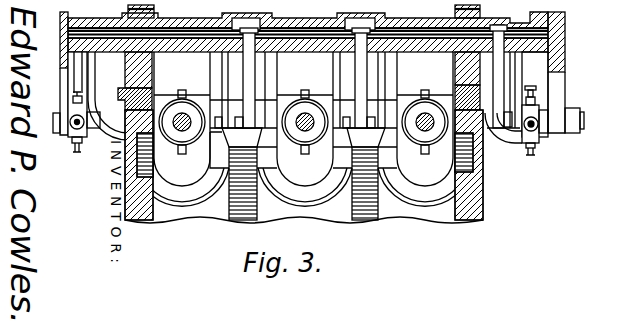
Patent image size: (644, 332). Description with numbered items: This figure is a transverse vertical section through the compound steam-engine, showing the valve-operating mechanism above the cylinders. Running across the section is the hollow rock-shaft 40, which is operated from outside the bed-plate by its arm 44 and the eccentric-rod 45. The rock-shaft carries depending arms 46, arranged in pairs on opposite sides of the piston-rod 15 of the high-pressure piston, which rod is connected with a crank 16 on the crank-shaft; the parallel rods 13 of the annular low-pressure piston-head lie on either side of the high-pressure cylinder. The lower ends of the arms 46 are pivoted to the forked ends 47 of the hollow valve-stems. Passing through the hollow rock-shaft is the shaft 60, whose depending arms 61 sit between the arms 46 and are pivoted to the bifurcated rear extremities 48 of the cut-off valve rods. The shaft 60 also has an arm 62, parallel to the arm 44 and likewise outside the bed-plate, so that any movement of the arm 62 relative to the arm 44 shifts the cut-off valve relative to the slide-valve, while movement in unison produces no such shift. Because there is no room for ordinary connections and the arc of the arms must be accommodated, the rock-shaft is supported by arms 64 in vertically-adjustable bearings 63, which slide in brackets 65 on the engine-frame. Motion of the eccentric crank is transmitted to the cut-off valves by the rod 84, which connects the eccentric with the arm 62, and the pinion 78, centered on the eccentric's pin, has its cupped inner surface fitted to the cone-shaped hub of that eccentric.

The parallel rods 13 is at (180, 128).
The piston-rod 15 is at (303, 129).
The crank 16 is at (338, 80).
The rock-shaft 40 is at (199, 25).
The arm 44 is at (560, 78).
The eccentric-rod 45 is at (585, 119).
The depending arms 46 is at (224, 63).
The forked ends 47 is at (239, 127).
The bifurcated rear extremities 48 is at (247, 129).
The shaft 60 is at (101, 29).
The depending arms 61 is at (335, 60).
The arm 62 is at (496, 70).
The vertically-adjustable bearings 63 is at (152, 57).
The arms 64 is at (88, 89).
The brackets 65 is at (129, 74).
The pinion or segment of a pinion 78 is at (539, 130).
The rod 84 is at (507, 134).